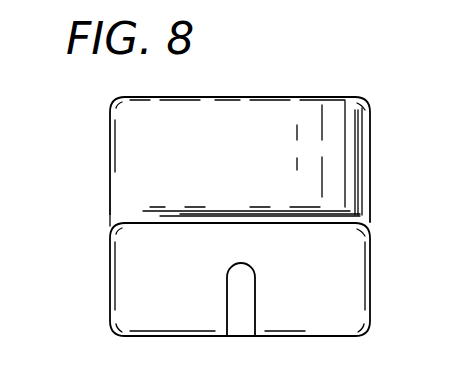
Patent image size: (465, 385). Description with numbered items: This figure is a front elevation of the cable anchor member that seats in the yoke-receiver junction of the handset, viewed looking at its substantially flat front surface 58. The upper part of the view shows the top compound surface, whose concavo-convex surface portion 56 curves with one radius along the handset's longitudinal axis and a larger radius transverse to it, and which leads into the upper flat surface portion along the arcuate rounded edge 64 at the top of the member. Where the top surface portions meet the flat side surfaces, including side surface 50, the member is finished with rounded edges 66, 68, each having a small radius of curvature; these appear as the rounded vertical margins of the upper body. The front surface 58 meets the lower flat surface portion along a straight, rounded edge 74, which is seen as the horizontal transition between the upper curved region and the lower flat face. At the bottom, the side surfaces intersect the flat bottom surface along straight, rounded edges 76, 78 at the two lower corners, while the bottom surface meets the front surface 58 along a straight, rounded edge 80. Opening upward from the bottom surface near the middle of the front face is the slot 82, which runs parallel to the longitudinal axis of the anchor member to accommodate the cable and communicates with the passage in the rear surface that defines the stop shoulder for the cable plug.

The side surface 50 is at (462, 355).
The concavo-convex surface portion 56 is at (332, 138).
The front surface 58 is at (340, 279).
The arcuate rounded edge 64 is at (247, 93).
The rounded edge 66 is at (117, 100).
The rounded edge 68 is at (364, 100).
The rounded edge 74 is at (200, 223).
The rounded edge 76 is at (118, 331).
The rounded edge 78 is at (368, 330).
The rounded edge 80 is at (165, 339).
The slot 82 is at (247, 318).